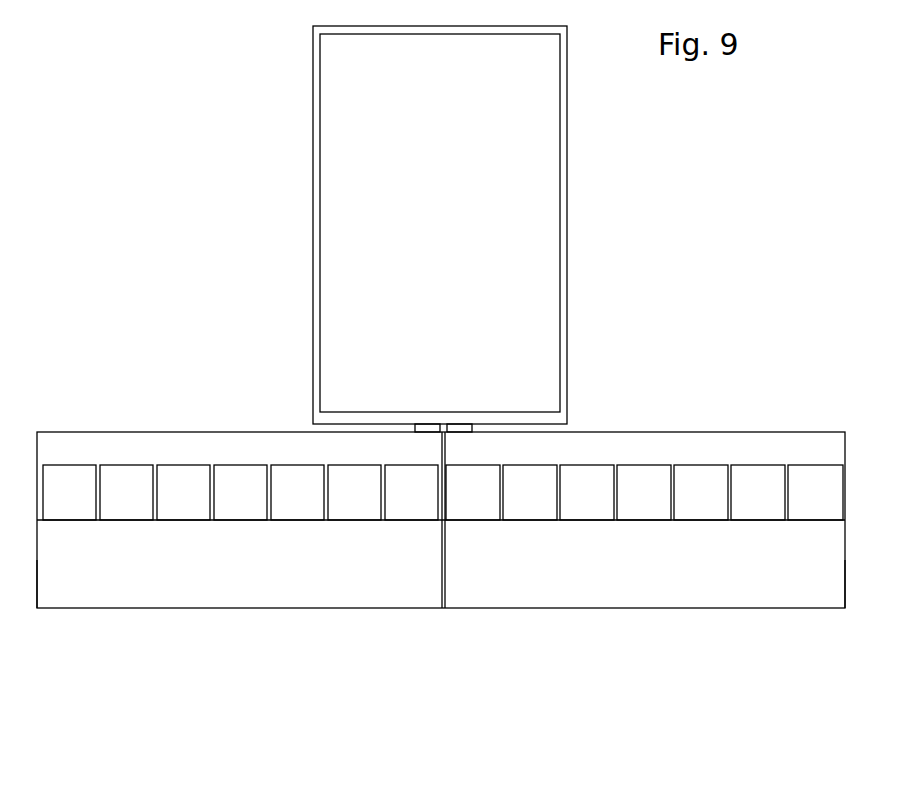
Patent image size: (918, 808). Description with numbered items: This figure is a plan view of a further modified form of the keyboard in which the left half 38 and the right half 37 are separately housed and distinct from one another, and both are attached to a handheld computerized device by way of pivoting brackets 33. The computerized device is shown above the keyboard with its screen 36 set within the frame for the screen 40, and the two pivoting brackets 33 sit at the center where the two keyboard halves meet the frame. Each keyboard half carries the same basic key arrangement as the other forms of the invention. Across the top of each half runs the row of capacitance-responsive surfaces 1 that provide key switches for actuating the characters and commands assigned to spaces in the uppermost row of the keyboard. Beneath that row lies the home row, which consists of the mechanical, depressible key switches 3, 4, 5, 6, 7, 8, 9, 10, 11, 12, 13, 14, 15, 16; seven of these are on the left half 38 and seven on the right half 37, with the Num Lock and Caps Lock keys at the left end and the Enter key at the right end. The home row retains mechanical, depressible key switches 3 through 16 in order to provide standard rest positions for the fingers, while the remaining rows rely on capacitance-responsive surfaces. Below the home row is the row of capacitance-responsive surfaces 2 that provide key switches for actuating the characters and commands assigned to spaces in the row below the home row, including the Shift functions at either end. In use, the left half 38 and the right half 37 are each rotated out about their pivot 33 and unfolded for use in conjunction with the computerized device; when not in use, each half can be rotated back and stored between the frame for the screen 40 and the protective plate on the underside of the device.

The row of capacitance-responsive key switches 1 is at (273, 447).
The row of capacitance-responsive key switches 2 is at (150, 590).
The mechanical depressible key switch 3 is at (53, 475).
The mechanical depressible key switch 4 is at (110, 477).
The mechanical depressible key switch 5 is at (168, 477).
The mechanical depressible key switch 6 is at (227, 475).
The mechanical depressible key switch 7 is at (307, 515).
The mechanical depressible key switch 8 is at (363, 515).
The mechanical depressible key switch 9 is at (423, 515).
The mechanical depressible key switch 10 is at (485, 515).
The mechanical depressible key switch 11 is at (545, 515).
The mechanical depressible key switch 12 is at (602, 515).
The mechanical depressible key switch 13 is at (657, 470).
The mechanical depressible key switch 14 is at (712, 470).
The mechanical depressible key switch 15 is at (770, 467).
The mechanical depressible key switch 16 is at (828, 467).
The pivoting bracket 33 is at (430, 427).
The screen 36 is at (368, 170).
The right half of the keyboard 37 is at (845, 608).
The left half of the keyboard 38 is at (40, 610).
The frame for the screen 40 is at (313, 114).